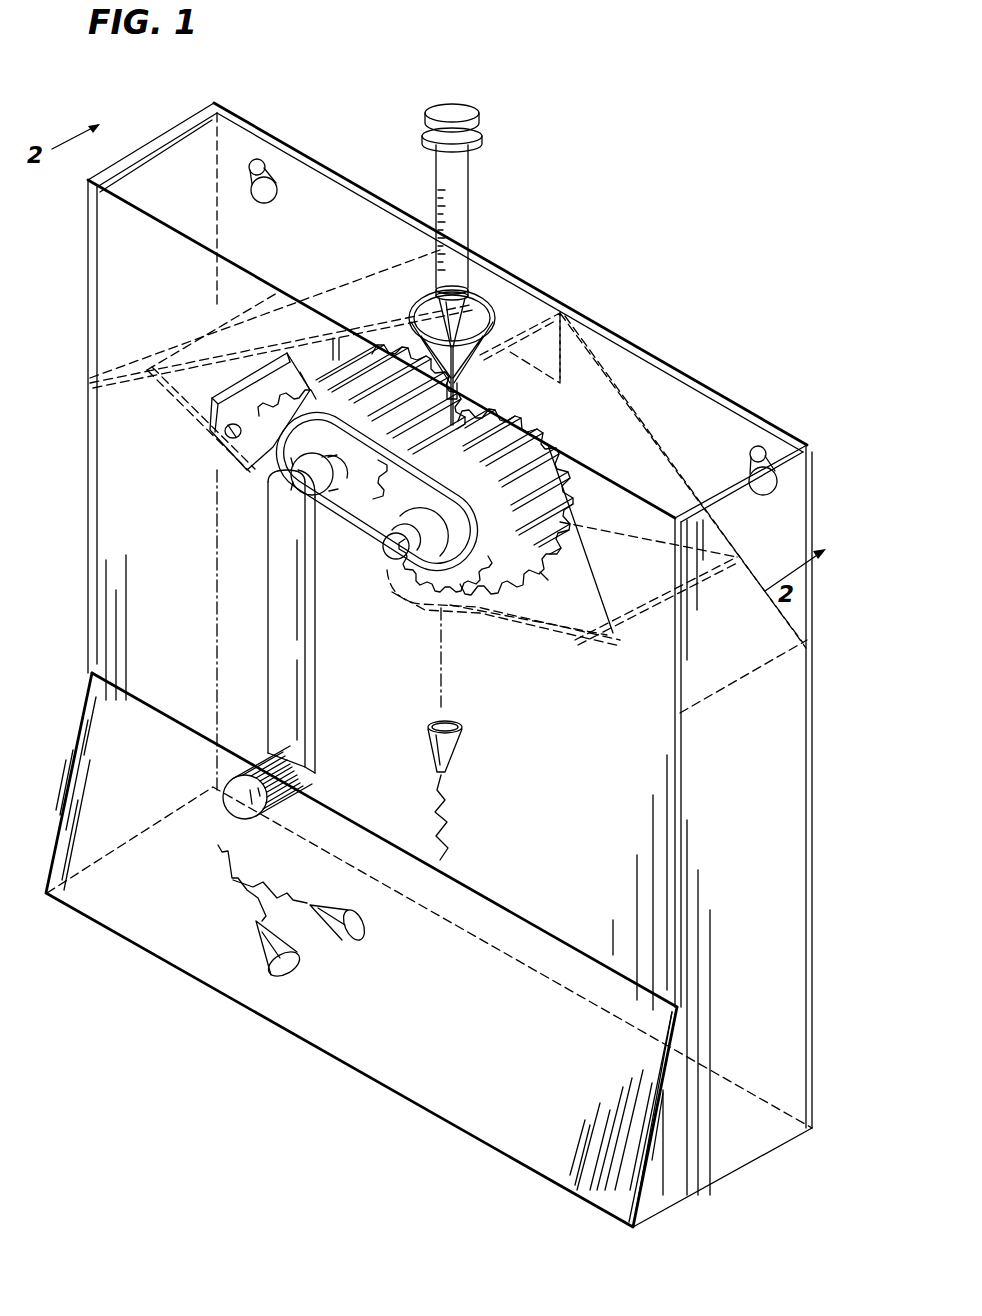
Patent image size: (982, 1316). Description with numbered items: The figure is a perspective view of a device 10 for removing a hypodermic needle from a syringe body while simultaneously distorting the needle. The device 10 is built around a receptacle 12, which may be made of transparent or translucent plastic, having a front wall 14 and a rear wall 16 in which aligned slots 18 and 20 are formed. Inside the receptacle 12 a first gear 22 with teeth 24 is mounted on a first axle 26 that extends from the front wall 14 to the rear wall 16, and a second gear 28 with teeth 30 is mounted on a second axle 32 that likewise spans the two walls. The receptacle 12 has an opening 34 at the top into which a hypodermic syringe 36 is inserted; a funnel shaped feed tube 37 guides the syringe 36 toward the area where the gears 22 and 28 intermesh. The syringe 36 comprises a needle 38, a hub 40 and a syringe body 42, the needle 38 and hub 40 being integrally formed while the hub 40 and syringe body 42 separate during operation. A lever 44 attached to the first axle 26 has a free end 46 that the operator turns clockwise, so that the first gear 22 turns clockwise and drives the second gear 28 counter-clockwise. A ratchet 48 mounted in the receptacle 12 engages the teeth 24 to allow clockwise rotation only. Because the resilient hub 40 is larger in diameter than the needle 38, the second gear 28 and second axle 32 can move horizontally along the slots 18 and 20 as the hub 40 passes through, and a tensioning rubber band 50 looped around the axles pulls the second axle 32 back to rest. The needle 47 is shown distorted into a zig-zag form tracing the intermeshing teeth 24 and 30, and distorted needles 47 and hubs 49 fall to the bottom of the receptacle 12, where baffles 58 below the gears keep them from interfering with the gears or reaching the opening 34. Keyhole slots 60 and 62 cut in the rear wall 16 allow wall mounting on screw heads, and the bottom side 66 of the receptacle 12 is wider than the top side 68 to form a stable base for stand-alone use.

The device 10 is at (335, 127).
The receptacle 12 is at (590, 815).
The front wall 14 is at (117, 500).
The rear wall 16 is at (763, 853).
The slot 18 is at (462, 592).
The slot 20 is at (588, 468).
The first gear 22 is at (252, 472).
The teeth 24 is at (264, 481).
The first axle 26 is at (334, 500).
The second gear 28 is at (482, 610).
The teeth 30 is at (540, 572).
The second axle 32 is at (389, 548).
The opening 34 is at (470, 297).
The hypodermic syringe 36 is at (494, 161).
The funnel shaped feed tube 37 is at (562, 302).
The needle 38 is at (460, 368).
The hub 40 is at (463, 312).
The syringe body 42 is at (468, 206).
The lever 44 is at (293, 665).
The free end 46 is at (320, 774).
The distorted needle 47 is at (460, 827).
The ratchet 48 is at (253, 392).
The hub 49 is at (462, 750).
The rubber band 50 is at (308, 380).
The baffles 58 is at (195, 418).
The keyhole slot 60 is at (247, 165).
The keyhole slot 62 is at (757, 445).
The bottom side 66 is at (757, 1133).
The top side 68 is at (172, 158).